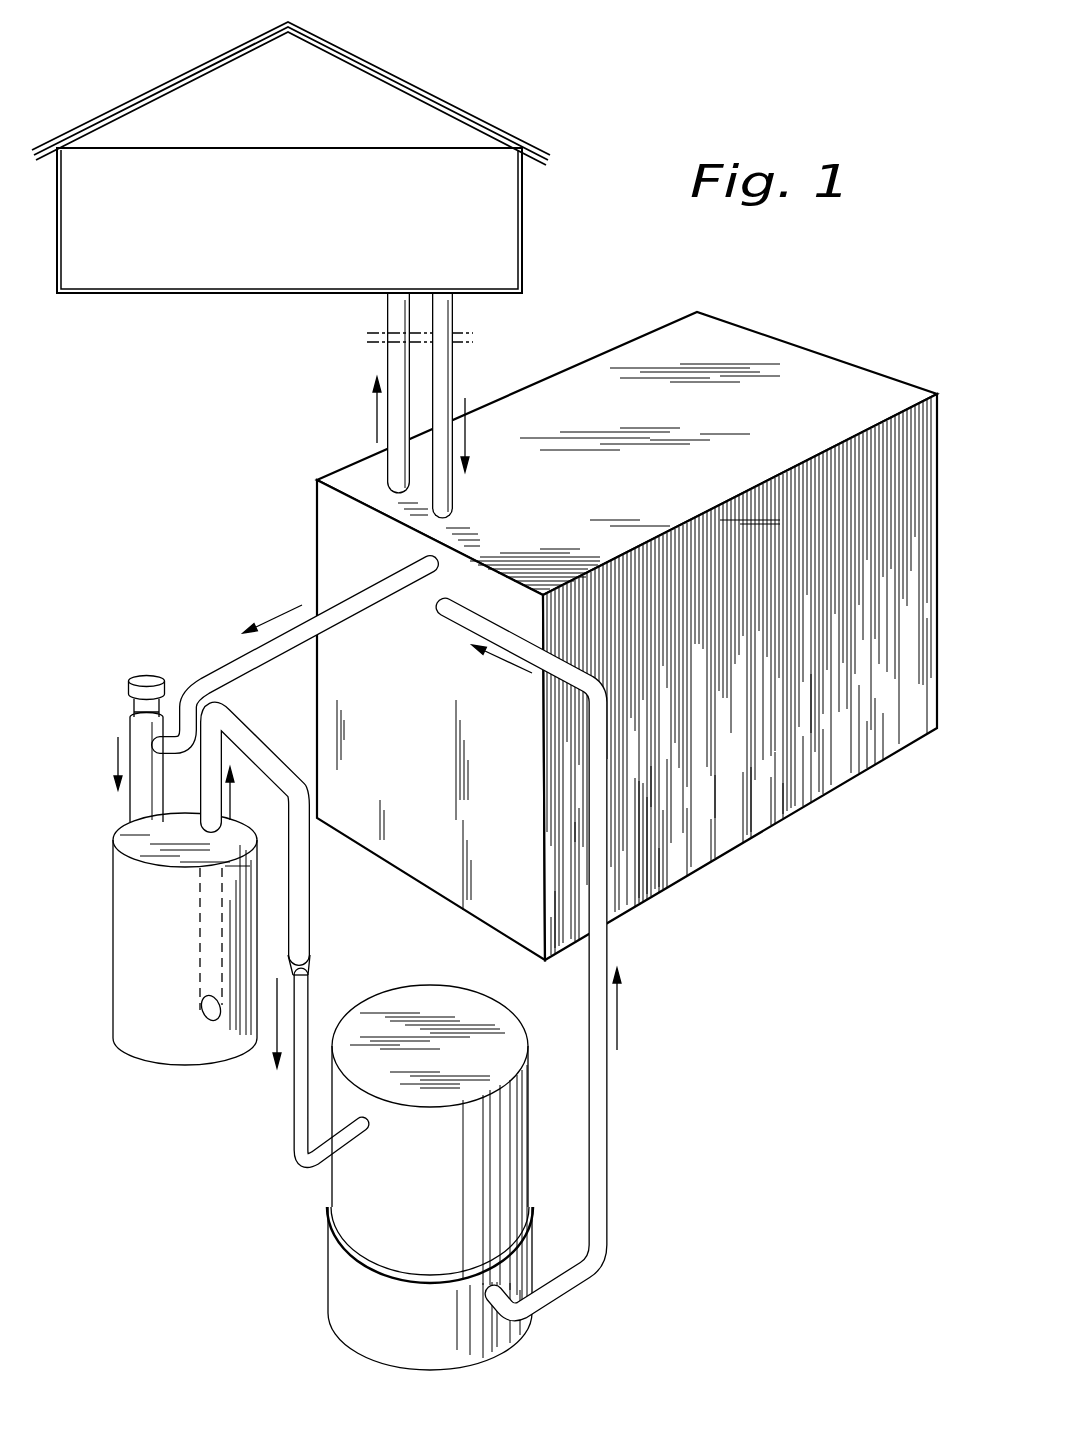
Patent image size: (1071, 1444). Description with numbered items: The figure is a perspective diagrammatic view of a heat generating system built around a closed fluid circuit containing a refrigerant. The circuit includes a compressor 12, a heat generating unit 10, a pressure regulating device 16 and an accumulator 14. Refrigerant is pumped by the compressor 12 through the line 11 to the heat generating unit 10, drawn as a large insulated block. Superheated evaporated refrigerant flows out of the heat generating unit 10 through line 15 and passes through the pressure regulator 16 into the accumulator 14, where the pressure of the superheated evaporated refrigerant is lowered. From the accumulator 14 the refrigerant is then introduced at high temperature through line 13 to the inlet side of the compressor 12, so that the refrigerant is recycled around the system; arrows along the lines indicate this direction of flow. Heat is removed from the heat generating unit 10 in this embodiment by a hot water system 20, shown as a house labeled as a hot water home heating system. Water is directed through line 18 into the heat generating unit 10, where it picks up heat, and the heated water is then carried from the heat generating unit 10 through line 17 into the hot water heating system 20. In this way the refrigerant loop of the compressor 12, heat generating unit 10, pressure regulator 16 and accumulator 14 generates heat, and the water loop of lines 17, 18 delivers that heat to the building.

The heat generating unit 10 is at (628, 314).
The line 11 is at (605, 957).
The compressor 12 is at (406, 973).
The line 13 is at (295, 1088).
The accumulator 14 is at (122, 930).
The line 15 is at (233, 655).
The pressure regulating device 16 is at (135, 678).
The line 17 is at (390, 370).
The line 18 is at (450, 358).
The hot water heating system 20 is at (482, 99).